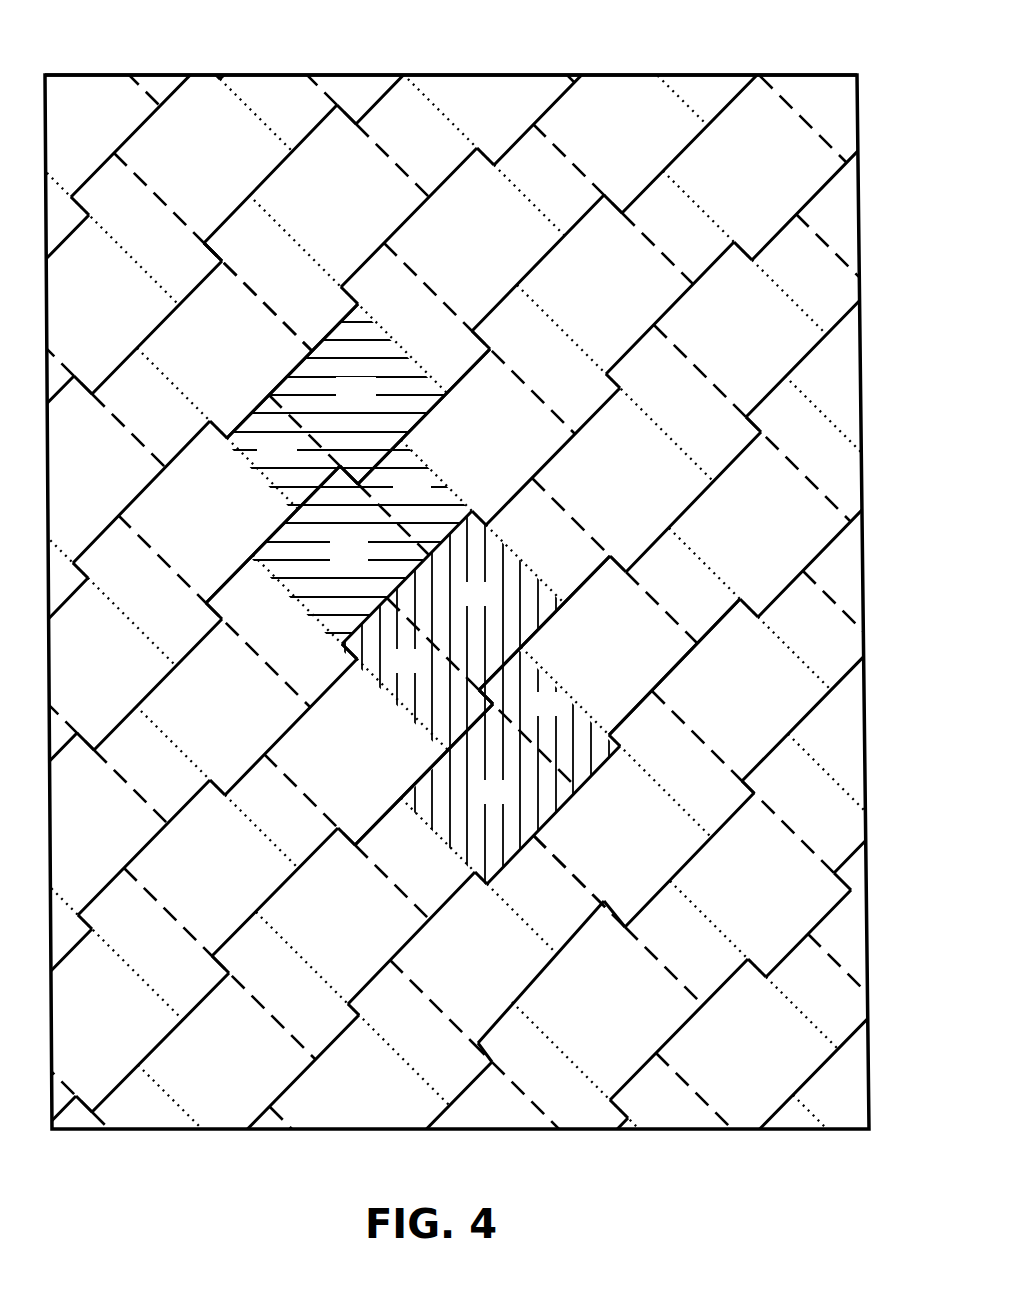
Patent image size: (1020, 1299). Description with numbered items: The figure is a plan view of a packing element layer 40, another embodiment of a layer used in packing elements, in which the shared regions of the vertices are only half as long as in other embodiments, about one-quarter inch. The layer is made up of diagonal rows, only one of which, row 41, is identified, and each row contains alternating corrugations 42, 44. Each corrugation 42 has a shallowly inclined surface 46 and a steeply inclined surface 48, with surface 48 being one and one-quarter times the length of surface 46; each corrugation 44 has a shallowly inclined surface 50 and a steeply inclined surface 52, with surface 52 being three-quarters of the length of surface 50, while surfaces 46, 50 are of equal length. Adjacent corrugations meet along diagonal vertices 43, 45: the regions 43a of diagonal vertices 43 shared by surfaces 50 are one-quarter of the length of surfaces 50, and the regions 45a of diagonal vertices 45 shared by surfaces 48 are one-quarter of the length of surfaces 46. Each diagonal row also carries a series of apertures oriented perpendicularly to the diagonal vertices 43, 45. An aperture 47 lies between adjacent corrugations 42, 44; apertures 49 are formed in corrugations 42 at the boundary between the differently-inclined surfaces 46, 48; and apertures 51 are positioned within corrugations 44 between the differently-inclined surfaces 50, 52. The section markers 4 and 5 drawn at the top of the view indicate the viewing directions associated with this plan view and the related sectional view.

The packing element layer 40 is at (868, 145).
The diagonal row 41 is at (163, 63).
The corrugation 42 is at (562, 653).
The diagonal vertex 43 is at (290, 420).
The shared region of diagonal vertex 43a is at (334, 470).
The corrugation 44 is at (448, 444).
The diagonal vertex 45 is at (238, 278).
The shared region of diagonal vertex 45a is at (208, 254).
The shallowly inclined surface 46 is at (498, 610).
The aperture 47 is at (358, 635).
The steeply inclined surface 48 is at (560, 719).
The aperture 49 is at (546, 622).
The shallowly inclined surface 50 is at (372, 405).
The aperture 51 is at (433, 413).
The steeply inclined surface 52 is at (294, 459).
The section line FIG. 4 is at (431, 30).
The section line FIG. 5 is at (473, 38).